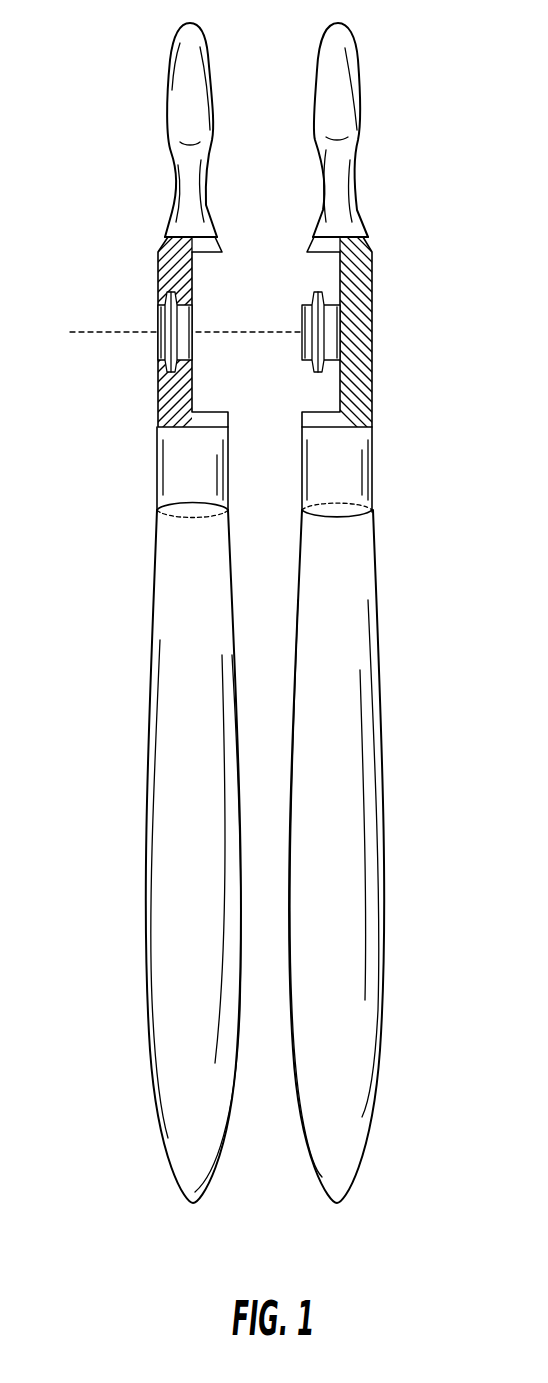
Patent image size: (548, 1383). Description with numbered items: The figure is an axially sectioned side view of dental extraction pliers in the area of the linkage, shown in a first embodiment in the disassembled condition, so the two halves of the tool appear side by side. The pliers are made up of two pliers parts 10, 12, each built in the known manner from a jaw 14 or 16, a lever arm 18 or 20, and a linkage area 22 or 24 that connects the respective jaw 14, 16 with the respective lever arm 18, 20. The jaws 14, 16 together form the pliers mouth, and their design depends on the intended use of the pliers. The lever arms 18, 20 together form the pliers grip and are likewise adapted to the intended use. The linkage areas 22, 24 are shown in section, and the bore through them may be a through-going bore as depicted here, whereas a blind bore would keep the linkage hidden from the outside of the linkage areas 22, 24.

The pliers part 10 is at (113, 461).
The second elongated member (right half of instrument) 12 is at (455, 461).
The jaw 14 is at (192, 144).
The jaw 16 is at (336, 137).
The lever arm 18 is at (156, 867).
The lever arm 20 is at (333, 839).
The linkage area 22 is at (172, 393).
The linkage area 24 is at (357, 378).